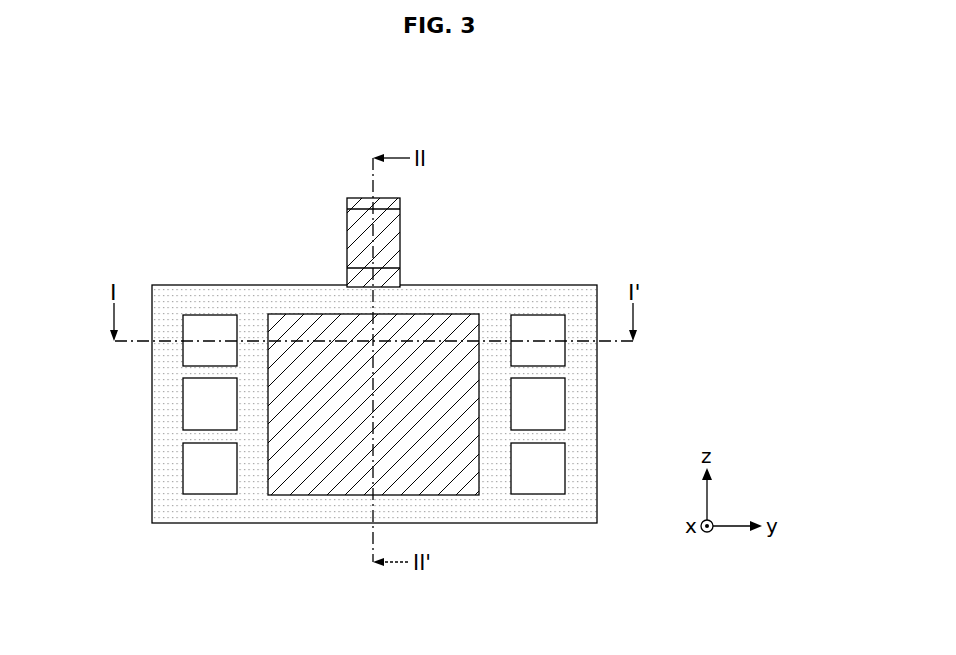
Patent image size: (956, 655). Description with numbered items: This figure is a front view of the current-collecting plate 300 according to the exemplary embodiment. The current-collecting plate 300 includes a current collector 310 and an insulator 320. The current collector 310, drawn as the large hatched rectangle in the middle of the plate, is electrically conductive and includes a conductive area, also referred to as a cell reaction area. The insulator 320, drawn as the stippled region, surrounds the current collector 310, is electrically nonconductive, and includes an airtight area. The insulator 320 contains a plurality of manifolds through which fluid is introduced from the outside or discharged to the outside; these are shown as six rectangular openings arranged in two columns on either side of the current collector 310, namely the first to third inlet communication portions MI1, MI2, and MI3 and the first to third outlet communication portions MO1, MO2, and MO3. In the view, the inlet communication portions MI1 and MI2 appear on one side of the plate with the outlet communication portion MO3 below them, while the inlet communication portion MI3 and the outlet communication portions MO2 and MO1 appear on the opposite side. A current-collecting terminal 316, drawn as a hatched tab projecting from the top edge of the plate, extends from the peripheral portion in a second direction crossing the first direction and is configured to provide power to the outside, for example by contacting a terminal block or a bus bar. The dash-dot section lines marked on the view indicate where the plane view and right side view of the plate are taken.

The current-collecting plate 300 is at (606, 136).
The current collector 310 is at (464, 480).
The current-collecting terminal 316 is at (404, 198).
The insulator 320 is at (586, 436).
The first inlet communication portion MI1 is at (191, 351).
The second inlet communication portion MI2 is at (191, 403).
The third inlet communication portion MI3 is at (551, 352).
The first outlet communication portion MO1 is at (541, 467).
The second outlet communication portion MO2 is at (541, 405).
The third outlet communication portion MO3 is at (191, 467).